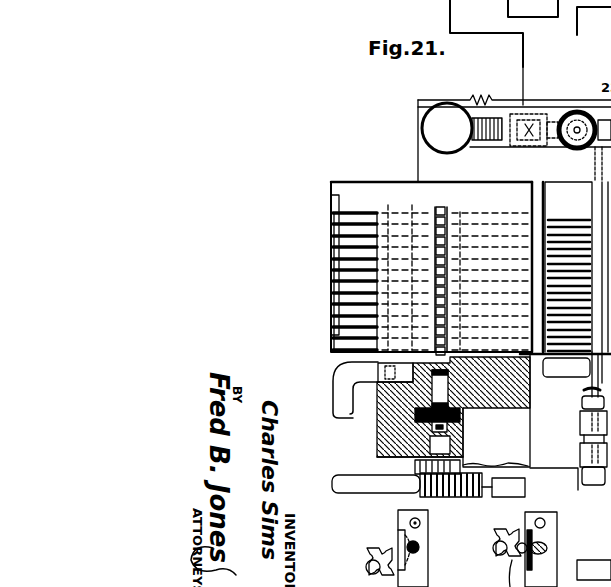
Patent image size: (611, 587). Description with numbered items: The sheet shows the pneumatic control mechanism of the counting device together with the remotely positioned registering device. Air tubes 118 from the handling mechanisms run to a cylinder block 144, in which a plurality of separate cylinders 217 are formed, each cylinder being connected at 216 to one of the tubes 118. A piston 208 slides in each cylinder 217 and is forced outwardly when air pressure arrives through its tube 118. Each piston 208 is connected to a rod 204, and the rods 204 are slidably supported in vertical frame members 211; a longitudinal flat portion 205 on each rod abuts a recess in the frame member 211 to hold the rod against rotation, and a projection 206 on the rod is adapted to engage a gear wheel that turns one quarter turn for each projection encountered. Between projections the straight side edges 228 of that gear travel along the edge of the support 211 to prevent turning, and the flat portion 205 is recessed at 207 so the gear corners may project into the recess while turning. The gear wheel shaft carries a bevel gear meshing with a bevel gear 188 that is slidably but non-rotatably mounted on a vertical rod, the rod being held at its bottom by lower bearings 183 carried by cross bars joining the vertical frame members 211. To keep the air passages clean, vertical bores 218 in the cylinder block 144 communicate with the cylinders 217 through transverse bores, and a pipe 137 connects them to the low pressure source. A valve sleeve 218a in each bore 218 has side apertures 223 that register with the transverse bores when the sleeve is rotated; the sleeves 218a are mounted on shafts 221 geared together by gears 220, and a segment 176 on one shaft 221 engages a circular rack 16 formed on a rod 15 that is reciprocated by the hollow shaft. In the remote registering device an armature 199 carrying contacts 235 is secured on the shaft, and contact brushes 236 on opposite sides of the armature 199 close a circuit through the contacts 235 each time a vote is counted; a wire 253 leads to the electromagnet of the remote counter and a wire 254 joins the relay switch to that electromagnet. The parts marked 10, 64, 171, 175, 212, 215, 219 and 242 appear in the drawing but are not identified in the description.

In FIG. 21, the control unit 10 is at (449, 128).
In FIG. 21, the rod 15 is at (372, 480).
In FIG. 21, the circular rack 16 is at (503, 487).
In FIG. 21, the frame member 64 is at (356, 168).
In FIG. 21, the tube 118 is at (344, 214).
In FIG. 21, the pipe 137 is at (356, 422).
In FIG. 21, the cylinder block 144 is at (403, 176).
In FIG. 21, the link 171 is at (518, 473).
In FIG. 21, the lever 175 is at (406, 470).
In FIG. 21, the segment 176 is at (462, 512).
In FIG. 21, the lower bearing 183 is at (580, 461).
In FIG. 21, the bevel gear 188 is at (583, 405).
In FIG. 21, the armature 199 is at (559, 97).
In FIG. 21, the rod 204 is at (420, 546).
In FIG. 21, the longitudinal flat portion 205 is at (428, 565).
In FIG. 21, the projection 206 is at (392, 544).
In FIG. 21, the recess 207 is at (428, 527).
In FIG. 21, the piston 208 is at (549, 219).
In FIG. 21, the vertical frame member 211 is at (428, 585).
In FIG. 21, the guide 212 is at (549, 206).
In FIG. 21, the sleeve 215 is at (580, 424).
In FIG. 21, the cylinder connection 216 is at (388, 207).
In FIG. 21, the cylinder 217 is at (413, 209).
In FIG. 21, the vertical bore 218 is at (450, 205).
In FIG. 21, the valve sleeve 218a is at (452, 208).
In FIG. 21, the block 219 is at (453, 407).
In FIG. 21, the gear 220 is at (462, 418).
In FIG. 21, the shaft 221 is at (453, 442).
In FIG. 21, the side aperture 223 is at (440, 198).
In FIG. 21, the straight side edge 228 is at (354, 572).
In FIG. 21, the contact 235 is at (591, 92).
In FIG. 21, the contact brush 236 is at (555, 108).
In FIG. 21, the wire 242 is at (418, 112).
In FIG. 18, the wire 253 is at (449, 15).
In FIG. 18, the wire 254 is at (539, 24).